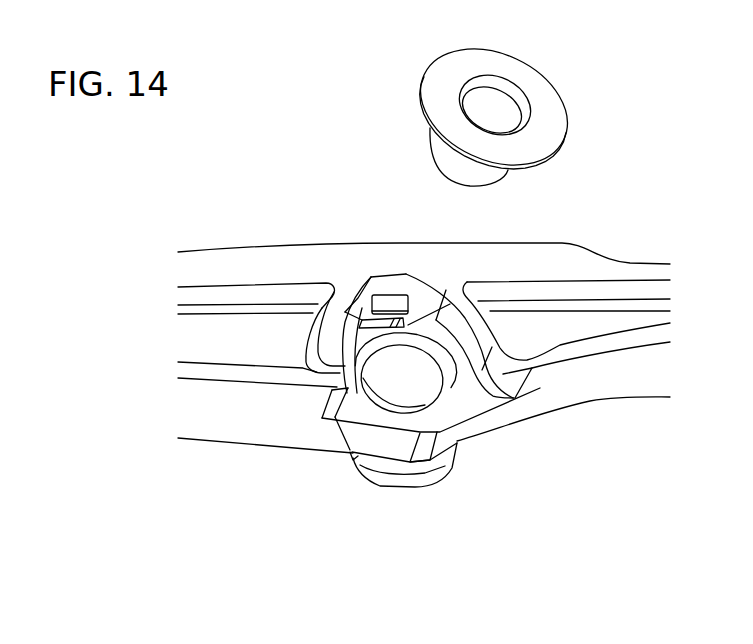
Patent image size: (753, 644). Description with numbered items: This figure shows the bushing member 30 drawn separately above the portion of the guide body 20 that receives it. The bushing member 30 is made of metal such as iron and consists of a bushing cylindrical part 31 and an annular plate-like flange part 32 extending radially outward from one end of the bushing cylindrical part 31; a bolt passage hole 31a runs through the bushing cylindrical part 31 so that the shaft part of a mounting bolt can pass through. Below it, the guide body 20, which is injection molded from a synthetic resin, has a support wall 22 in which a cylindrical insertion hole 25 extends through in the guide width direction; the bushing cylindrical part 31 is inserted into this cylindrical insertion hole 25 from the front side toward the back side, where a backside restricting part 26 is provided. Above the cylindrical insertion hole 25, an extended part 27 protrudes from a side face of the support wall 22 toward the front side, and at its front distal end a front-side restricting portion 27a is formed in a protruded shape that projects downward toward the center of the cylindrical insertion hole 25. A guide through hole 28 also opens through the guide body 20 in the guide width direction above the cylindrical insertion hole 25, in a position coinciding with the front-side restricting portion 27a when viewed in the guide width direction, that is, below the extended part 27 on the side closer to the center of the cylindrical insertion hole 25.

The guide body 20 is at (618, 262).
The support wall 22 is at (405, 460).
The backside restricting part 26 is at (403, 465).
The cylindrical insertion hole 25 is at (413, 390).
The extended part 27 is at (379, 262).
The front-side restricting portion 27a is at (399, 296).
The guide through hole 28 is at (368, 323).
The bushing member 30 is at (495, 94).
The bushing cylindrical part 31 is at (440, 148).
The bolt passage hole 31a is at (498, 106).
The flange part 32 is at (543, 116).